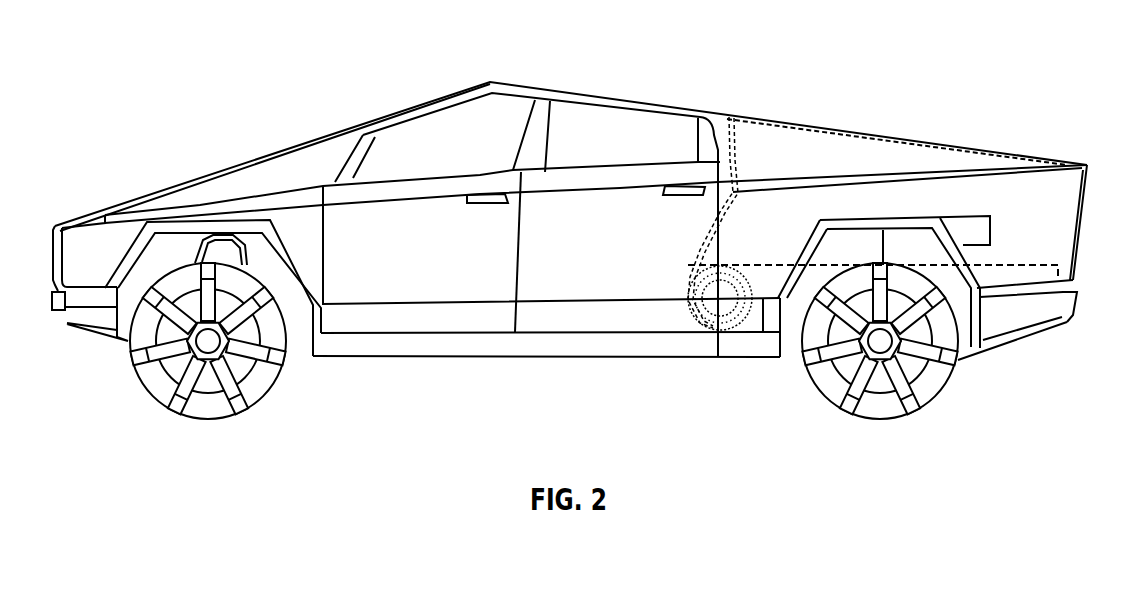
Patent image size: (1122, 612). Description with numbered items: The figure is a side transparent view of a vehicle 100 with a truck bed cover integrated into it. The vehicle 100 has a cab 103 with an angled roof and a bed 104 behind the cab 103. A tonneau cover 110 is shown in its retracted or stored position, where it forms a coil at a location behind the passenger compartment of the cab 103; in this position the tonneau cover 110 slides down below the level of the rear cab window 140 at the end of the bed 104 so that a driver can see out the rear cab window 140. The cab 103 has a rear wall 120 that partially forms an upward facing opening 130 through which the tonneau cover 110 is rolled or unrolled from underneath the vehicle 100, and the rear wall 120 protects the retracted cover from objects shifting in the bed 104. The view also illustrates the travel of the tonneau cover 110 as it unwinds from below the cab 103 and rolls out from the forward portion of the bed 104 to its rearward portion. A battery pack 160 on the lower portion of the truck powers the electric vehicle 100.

The vehicle 100 is at (143, 87).
The cab 103 is at (452, 97).
The bed 104 is at (950, 126).
The tonneau cover 110 is at (710, 330).
The rear wall 120 is at (733, 192).
The upward facing opening 130 is at (733, 158).
The rear cab window 140 is at (735, 117).
The battery pack 160 is at (438, 380).